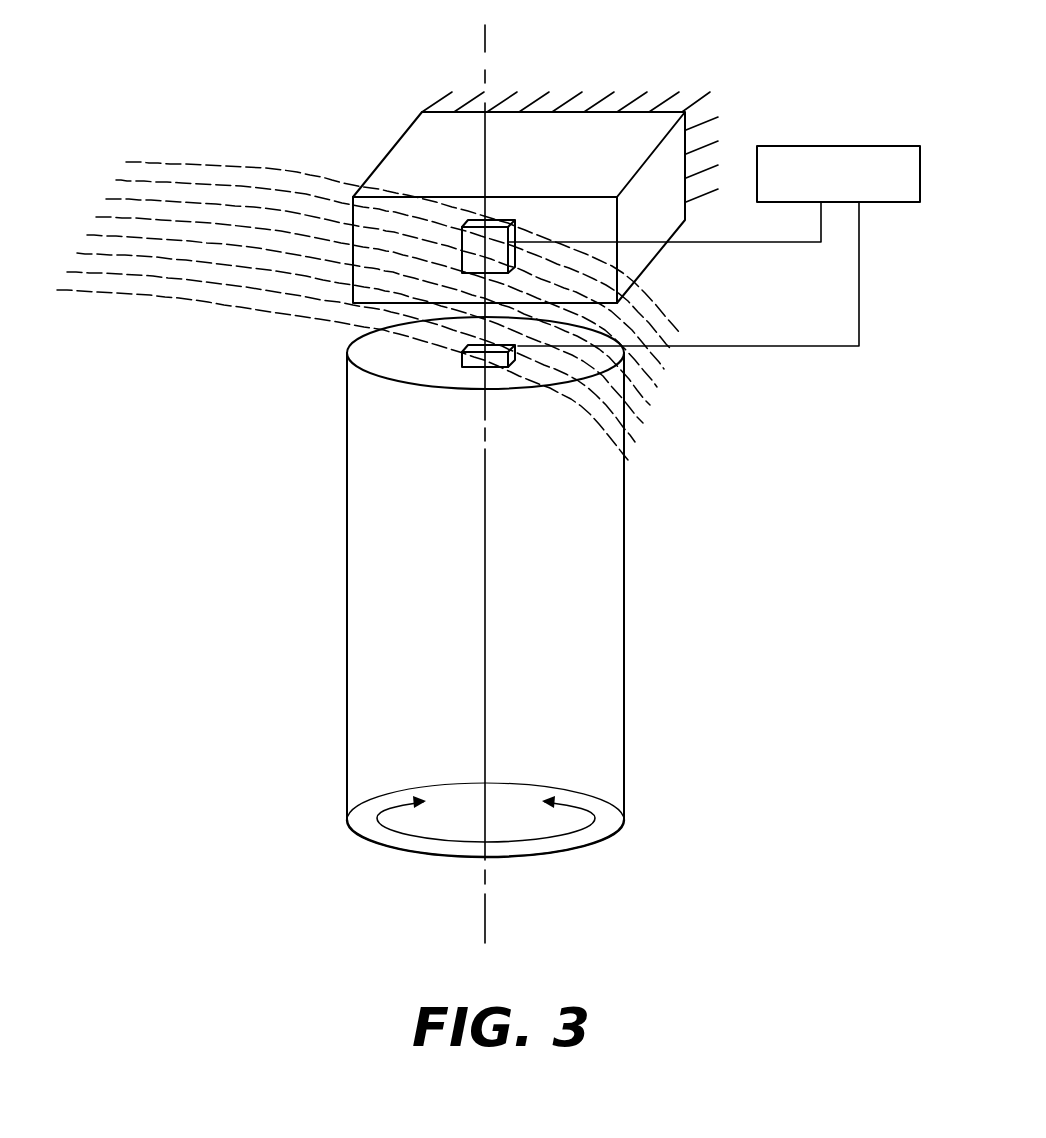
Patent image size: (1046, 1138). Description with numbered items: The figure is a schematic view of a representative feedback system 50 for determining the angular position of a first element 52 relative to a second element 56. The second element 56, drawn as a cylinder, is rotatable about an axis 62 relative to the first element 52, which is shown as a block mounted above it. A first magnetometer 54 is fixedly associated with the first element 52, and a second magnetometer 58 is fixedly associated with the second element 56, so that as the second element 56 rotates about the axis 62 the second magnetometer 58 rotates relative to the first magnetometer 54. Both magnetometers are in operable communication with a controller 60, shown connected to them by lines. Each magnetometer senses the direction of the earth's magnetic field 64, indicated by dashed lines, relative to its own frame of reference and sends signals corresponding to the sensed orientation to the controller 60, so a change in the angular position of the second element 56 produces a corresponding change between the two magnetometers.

The feedback system 50 is at (680, 492).
The first element 52 is at (395, 145).
The first magnetometer 54 is at (462, 257).
The second element 56 is at (374, 613).
The second magnetometer 58 is at (455, 353).
The controller 60 is at (890, 147).
The axis 62 is at (486, 50).
The earth's magnetic field 64 is at (220, 152).